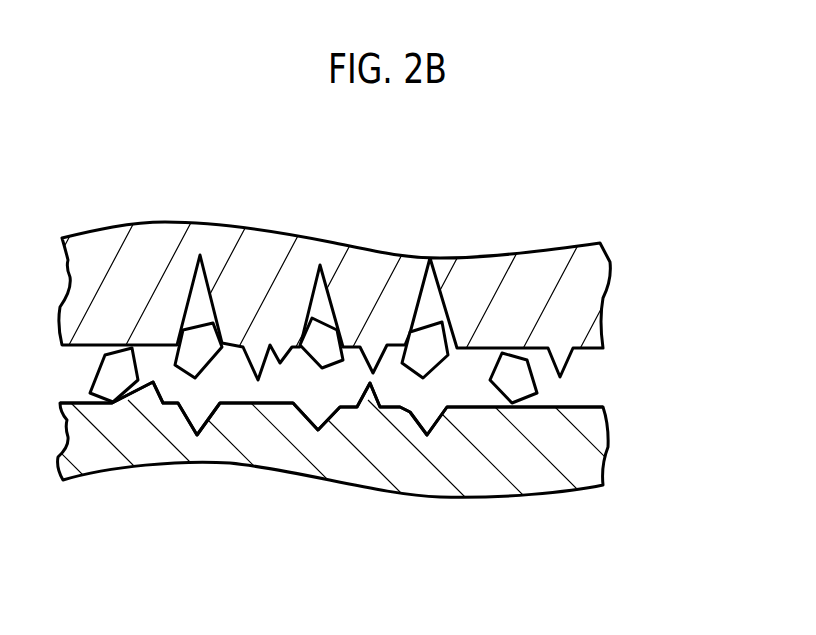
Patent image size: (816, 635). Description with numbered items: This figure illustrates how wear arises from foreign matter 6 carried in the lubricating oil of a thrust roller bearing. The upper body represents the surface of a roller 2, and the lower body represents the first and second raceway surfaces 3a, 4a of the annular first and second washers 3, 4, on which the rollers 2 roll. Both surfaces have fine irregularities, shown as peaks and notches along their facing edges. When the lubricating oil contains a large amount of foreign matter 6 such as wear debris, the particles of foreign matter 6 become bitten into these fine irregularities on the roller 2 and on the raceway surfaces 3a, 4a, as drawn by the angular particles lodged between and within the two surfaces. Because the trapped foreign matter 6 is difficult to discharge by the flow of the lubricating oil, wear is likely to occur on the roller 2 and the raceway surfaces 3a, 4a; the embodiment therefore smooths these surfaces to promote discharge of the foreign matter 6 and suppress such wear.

The roller 2 is at (558, 237).
The first washer 3 is at (324, 496).
The second washer 4 is at (572, 518).
The first raceway surface 3a is at (401, 388).
The second raceway surface 4a is at (573, 405).
The foreign matter 6 is at (190, 362).